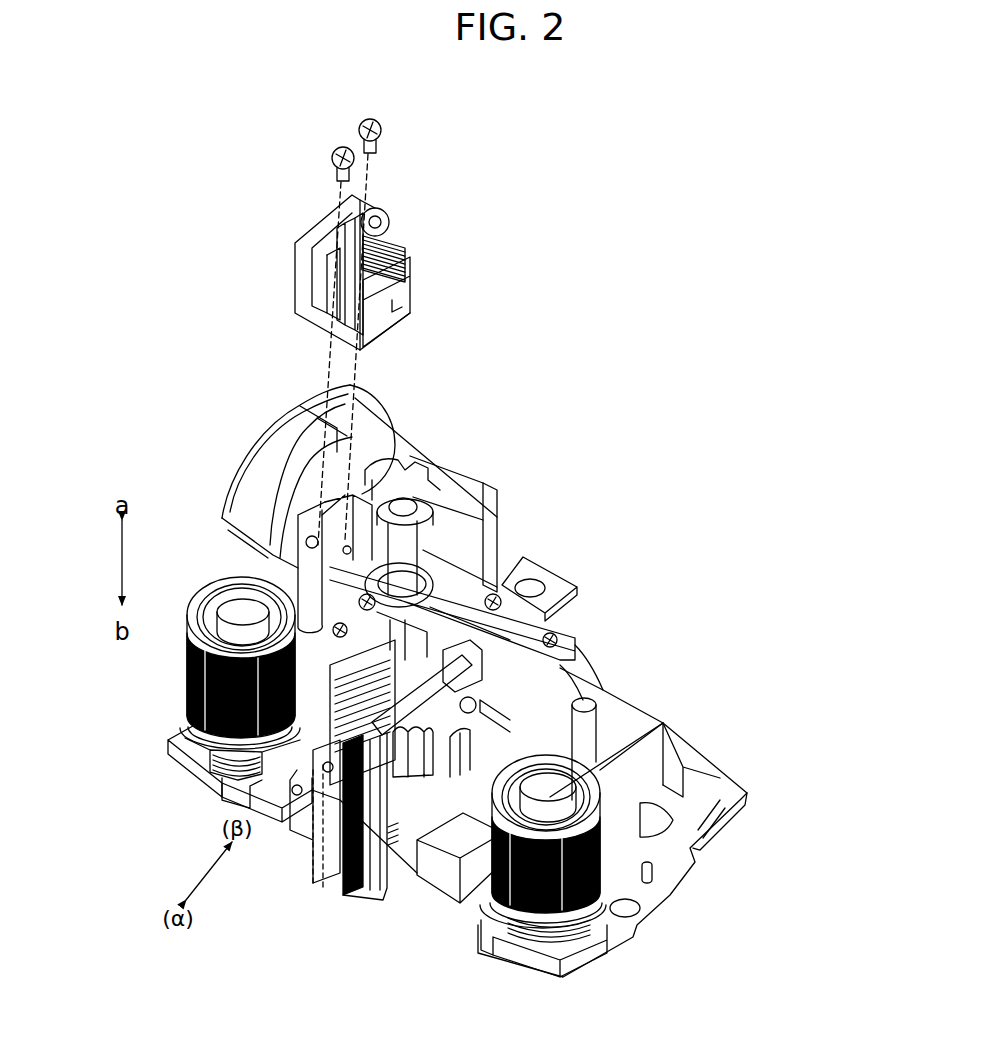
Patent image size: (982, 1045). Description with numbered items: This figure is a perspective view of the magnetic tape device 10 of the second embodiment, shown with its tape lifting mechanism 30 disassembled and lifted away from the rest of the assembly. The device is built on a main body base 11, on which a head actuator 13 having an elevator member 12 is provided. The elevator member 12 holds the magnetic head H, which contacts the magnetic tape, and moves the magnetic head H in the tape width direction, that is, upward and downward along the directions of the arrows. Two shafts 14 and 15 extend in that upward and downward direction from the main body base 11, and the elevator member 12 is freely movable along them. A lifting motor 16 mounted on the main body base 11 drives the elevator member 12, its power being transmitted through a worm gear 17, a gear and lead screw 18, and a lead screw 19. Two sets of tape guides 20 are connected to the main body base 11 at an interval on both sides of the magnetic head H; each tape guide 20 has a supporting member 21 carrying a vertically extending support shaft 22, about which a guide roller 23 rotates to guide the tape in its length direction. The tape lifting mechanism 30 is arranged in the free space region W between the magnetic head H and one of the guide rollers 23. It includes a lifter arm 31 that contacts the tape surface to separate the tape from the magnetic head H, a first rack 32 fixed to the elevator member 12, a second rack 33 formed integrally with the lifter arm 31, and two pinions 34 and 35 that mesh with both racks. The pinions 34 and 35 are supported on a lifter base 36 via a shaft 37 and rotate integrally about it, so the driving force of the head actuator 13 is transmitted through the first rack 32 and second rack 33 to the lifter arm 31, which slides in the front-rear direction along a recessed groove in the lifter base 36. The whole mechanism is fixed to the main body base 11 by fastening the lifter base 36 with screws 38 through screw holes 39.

The magnetic tape device 10 is at (668, 370).
The main body base 11 is at (727, 788).
The elevator member 12 is at (587, 666).
The head actuator 13 is at (545, 420).
The shaft 14 is at (623, 695).
The shaft 15 is at (276, 574).
The lifting motor 16 is at (390, 437).
The worm gear 17 is at (485, 506).
The gear and lead screw 18 is at (493, 528).
The lead screw 19 is at (407, 545).
The tape guide 20 is at (168, 700).
The supporting member 21 is at (190, 783).
The support shaft 22 is at (240, 606).
The guide roller 23 is at (185, 661).
The tape lifting mechanism 30 is at (329, 265).
The lifter arm 31 is at (316, 318).
The first rack 32 is at (548, 614).
The second rack 33 is at (410, 270).
The pinion 34 is at (384, 215).
The pinion 35 is at (393, 238).
The lifter base 36 is at (394, 320).
The shaft 37 is at (402, 263).
The screws 38 is at (357, 127).
The screw holes 39 is at (325, 835).
The free space region W is at (267, 783).
The magnetic head H is at (352, 890).